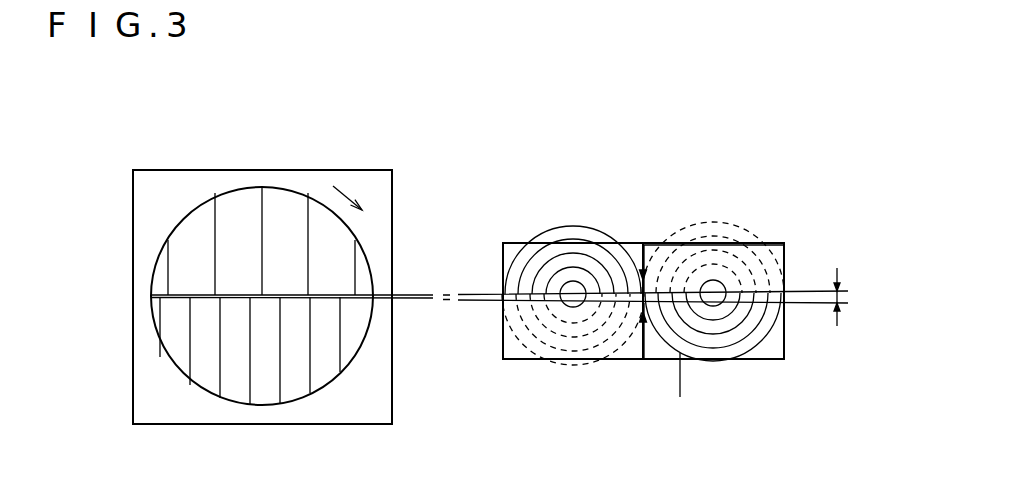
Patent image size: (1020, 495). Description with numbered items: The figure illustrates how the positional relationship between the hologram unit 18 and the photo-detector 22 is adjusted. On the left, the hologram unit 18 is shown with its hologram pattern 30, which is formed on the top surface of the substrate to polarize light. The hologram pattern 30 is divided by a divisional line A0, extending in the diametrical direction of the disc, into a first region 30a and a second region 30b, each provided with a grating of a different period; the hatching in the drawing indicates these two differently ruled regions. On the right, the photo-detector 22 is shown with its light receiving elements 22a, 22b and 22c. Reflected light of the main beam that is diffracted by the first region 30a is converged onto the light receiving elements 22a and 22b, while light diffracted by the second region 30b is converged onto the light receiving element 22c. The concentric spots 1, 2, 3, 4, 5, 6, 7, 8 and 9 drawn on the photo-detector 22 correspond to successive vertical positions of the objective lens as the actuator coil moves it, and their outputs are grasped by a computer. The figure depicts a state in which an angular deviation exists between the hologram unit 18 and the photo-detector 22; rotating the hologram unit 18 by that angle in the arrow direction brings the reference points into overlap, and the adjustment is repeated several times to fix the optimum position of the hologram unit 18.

The hologram unit 18 is at (392, 162).
The hologram pattern 30 is at (192, 227).
The divisional line A0 is at (240, 293).
The first region 30a is at (272, 390).
The second region 30b is at (283, 198).
The photo-detector 22 is at (653, 188).
The light receiving element 22a is at (780, 243).
The light receiving element 22b is at (777, 343).
The light receiving element 22c is at (522, 257).
The spot 1 is at (575, 227).
The spot 2 is at (583, 240).
The spot 3 is at (593, 252).
The spot 4 is at (602, 277).
The spot 5 is at (567, 280).
The spot 6 is at (622, 333).
The spot 7 is at (603, 347).
The spot 8 is at (590, 353).
The spot 9 is at (575, 360).